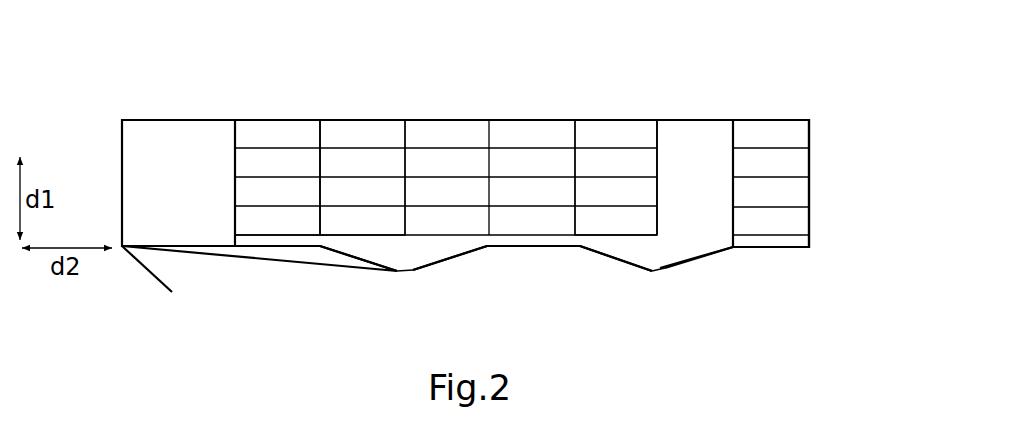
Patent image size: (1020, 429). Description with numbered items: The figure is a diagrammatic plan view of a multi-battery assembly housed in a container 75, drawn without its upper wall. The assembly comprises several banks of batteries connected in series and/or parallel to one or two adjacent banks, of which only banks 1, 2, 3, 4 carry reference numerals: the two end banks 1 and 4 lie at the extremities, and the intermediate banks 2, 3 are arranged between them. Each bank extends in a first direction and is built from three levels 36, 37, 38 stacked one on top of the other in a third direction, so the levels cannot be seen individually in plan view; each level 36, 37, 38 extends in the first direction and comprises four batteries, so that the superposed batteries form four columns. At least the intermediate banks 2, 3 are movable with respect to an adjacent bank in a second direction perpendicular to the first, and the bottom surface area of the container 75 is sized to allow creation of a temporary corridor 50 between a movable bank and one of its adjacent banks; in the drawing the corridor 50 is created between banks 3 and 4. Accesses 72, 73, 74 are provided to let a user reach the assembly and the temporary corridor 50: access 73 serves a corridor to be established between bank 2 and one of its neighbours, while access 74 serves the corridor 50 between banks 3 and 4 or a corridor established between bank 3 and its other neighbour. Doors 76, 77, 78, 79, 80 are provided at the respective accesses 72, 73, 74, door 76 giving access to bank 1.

The end bank 1 is at (278, 97).
The intermediate bank 2 is at (363, 97).
The intermediate bank 3 is at (613, 97).
The end bank 4 is at (772, 97).
The temporary corridor 50 is at (697, 143).
The level 36 is at (499, 199).
The level 37 is at (499, 199).
The level 38 is at (838, 190).
The access 72 is at (193, 276).
The access 73 is at (407, 258).
The access 74 is at (660, 252).
The container 75 is at (122, 160).
The door 76 is at (145, 272).
The door 77 is at (355, 262).
The door 78 is at (450, 262).
The door 79 is at (609, 260).
The door 80 is at (697, 262).